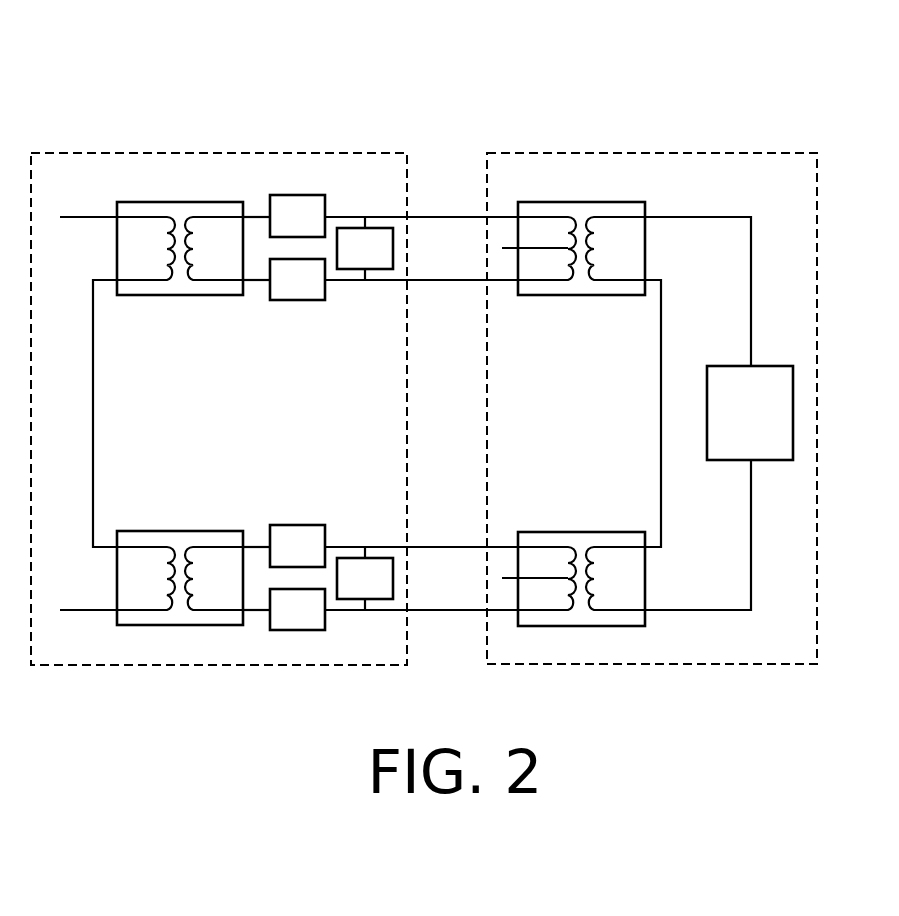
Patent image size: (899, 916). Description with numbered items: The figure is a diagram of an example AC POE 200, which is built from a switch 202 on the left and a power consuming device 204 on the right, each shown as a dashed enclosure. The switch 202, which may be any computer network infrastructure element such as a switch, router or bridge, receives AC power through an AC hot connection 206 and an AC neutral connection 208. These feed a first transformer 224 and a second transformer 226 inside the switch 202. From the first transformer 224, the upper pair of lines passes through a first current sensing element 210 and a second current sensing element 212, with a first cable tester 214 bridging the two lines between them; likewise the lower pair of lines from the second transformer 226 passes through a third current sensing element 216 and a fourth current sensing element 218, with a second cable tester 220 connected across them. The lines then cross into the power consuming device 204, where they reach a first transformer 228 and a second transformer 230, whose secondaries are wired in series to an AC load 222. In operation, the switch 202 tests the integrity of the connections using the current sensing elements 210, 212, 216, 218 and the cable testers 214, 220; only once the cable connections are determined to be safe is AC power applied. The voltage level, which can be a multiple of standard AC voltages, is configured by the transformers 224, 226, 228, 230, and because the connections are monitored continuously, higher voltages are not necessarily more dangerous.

The AC POE 200 is at (110, 30).
The switch 202 is at (219, 377).
The power consuming device 204 is at (652, 377).
The AC hot connection 206 is at (81, 234).
The AC neutral connection 208 is at (81, 595).
The first current sensing element 210 is at (297, 216).
The second current sensing element 212 is at (297, 279).
The first cable tester 214 is at (365, 248).
The third current sensing element 216 is at (297, 546).
The fourth current sensing element 218 is at (297, 609).
The second cable tester 220 is at (365, 578).
The AC load 222 is at (750, 413).
The first transformer 224 is at (183, 283).
The second transformer 226 is at (180, 542).
The first transformer 228 is at (573, 282).
The second transformer 230 is at (573, 543).